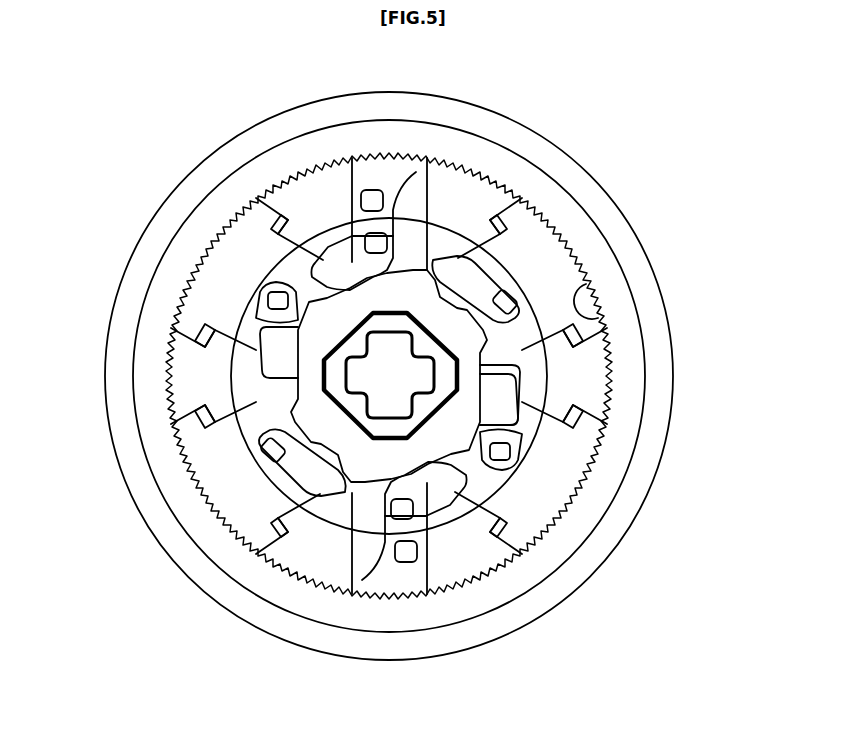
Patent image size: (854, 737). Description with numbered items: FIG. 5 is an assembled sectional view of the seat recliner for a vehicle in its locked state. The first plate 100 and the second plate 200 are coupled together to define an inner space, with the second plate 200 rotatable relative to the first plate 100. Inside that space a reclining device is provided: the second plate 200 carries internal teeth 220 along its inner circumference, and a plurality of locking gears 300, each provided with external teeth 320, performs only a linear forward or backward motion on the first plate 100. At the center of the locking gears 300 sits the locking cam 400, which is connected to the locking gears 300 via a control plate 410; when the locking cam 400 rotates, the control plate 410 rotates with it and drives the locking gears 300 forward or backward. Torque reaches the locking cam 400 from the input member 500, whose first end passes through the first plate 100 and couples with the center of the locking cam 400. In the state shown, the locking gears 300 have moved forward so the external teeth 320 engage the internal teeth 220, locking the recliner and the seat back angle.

The first plate 100 is at (633, 253).
The second plate 200 is at (570, 213).
The internal teeth 220 is at (500, 177).
The locking gear 300 is at (222, 470).
The external teeth 320 is at (607, 321).
The locking cam 400 is at (457, 422).
The control plate 410 is at (548, 377).
The input member 500 is at (358, 405).